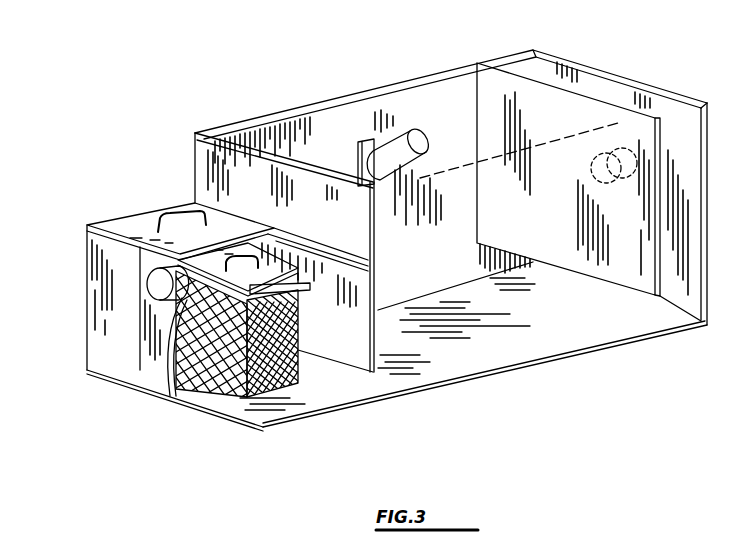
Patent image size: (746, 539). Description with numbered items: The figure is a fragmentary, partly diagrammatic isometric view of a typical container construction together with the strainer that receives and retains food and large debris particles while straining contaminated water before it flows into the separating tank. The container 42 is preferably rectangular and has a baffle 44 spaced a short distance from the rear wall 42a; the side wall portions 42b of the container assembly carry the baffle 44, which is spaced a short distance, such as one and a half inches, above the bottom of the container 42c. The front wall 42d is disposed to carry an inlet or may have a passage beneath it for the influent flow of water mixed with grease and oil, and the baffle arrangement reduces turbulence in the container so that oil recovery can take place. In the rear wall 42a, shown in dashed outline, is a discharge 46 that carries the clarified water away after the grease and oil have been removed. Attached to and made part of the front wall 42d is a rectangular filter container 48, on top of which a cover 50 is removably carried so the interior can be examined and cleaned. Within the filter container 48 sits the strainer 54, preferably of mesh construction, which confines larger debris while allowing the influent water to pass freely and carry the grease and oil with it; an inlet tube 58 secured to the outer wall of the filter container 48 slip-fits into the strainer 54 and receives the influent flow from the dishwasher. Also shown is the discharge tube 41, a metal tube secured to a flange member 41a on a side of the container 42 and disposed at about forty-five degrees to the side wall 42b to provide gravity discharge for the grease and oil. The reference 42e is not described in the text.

The container 42 is at (264, 104).
The rear wall 42a is at (614, 45).
The side wall portions 42b is at (340, 94).
The bottom of the container 42c is at (452, 168).
The front wall 42d is at (203, 169).
The bottom wall 42e is at (508, 352).
The baffle 44 is at (532, 164).
The discharge 46 is at (622, 121).
The discharge tube 41 is at (374, 160).
The flange member 41a is at (374, 146).
The filter container 48 is at (97, 325).
The cover 50 is at (123, 224).
The strainer 54 is at (298, 384).
The inlet tube 58 is at (150, 279).